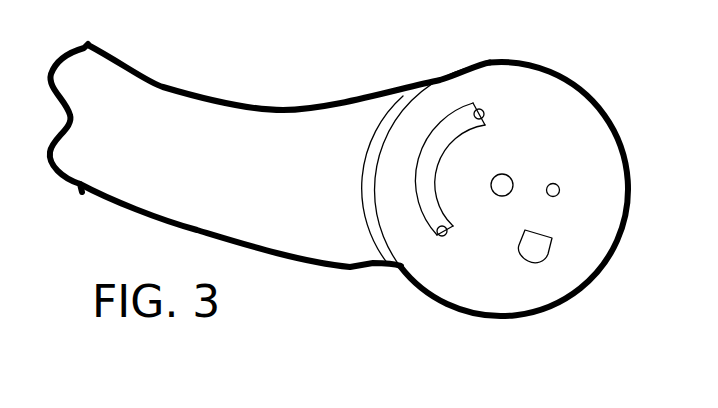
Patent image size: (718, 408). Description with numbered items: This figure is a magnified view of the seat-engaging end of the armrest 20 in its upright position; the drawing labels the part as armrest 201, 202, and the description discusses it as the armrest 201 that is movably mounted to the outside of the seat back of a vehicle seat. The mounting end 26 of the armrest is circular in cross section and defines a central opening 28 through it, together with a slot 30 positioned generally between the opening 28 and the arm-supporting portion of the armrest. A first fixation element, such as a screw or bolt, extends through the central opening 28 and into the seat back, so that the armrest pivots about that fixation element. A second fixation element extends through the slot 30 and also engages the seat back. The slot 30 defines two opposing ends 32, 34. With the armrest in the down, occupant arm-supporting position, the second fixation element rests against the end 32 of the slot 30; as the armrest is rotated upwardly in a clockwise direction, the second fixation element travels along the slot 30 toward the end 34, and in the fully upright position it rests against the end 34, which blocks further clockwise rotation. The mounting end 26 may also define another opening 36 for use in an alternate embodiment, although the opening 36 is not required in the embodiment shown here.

The armrest 20 is at (270, 151).
The armrest 201 is at (270, 151).
The second handle portion 202 is at (161, 86).
The mounting end 26 is at (628, 150).
The central opening 28 is at (508, 175).
The slot 30 is at (447, 171).
The end of slot 32 is at (480, 108).
The end of slot 34 is at (440, 237).
The opening 36 is at (527, 263).